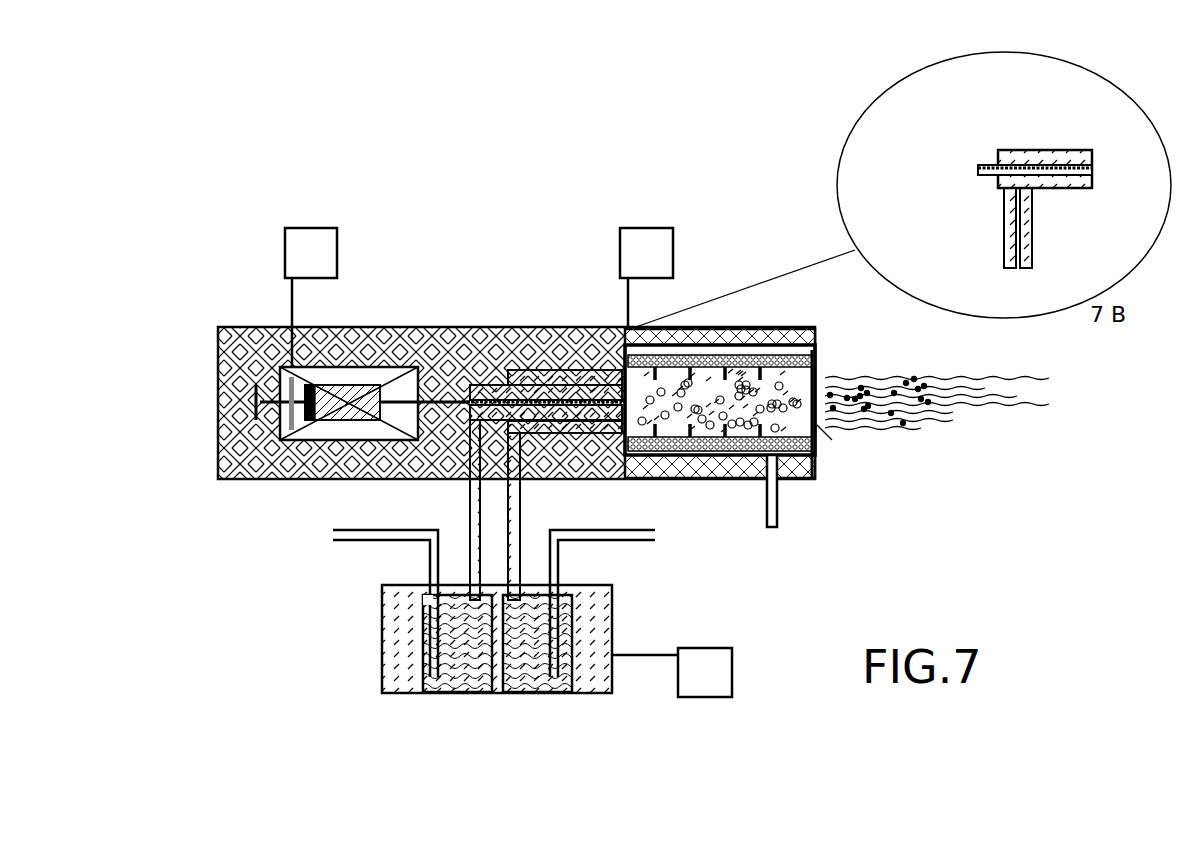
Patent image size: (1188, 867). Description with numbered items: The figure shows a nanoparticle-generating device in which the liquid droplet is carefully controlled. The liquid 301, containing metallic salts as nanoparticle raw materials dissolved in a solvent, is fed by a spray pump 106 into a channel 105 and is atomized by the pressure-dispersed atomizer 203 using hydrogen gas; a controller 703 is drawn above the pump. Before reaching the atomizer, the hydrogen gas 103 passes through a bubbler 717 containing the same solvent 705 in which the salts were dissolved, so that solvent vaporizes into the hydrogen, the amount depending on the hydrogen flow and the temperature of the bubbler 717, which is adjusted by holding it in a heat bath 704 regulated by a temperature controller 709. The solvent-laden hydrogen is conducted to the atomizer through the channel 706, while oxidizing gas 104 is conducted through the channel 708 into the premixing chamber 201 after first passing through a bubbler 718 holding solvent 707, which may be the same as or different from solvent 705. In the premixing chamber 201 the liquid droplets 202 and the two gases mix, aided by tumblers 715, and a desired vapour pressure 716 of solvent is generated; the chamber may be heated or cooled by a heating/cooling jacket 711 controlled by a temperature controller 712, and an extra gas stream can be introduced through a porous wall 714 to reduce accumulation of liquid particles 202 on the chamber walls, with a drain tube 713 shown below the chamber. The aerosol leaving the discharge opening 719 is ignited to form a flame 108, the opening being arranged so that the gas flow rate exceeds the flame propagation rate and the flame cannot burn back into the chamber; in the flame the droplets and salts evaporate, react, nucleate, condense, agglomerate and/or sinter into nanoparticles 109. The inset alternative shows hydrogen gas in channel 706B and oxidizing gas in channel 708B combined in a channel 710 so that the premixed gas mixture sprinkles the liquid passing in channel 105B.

In FIG. 7, the pump controller 703 is at (307, 228).
In FIG. 7, the temperature controller 712 is at (640, 228).
In FIG. 7, the spray pump 106 is at (363, 402).
In FIG. 7, the liquid 301 is at (330, 440).
In FIG. 7, the channel 105 is at (450, 388).
In FIG. 7, the pressure-dispersed atomizer 203 is at (617, 365).
In FIG. 7, the premixing chamber 201 is at (747, 390).
In FIG. 7, the tumblers 715 is at (690, 372).
In FIG. 7, the vapour pressure 716 is at (820, 358).
In FIG. 7, the heating/cooling jacket 711 is at (726, 481).
In FIG. 7, the liquid droplets 202 is at (803, 477).
In FIG. 7, the porous wall 714 is at (815, 455).
In FIG. 7, the flame 108 is at (937, 427).
In FIG. 7, the nanoparticles 109 is at (940, 412).
In FIG. 7, the discharge opening 719 is at (820, 412).
In FIG. 7, the drain tube 713 is at (772, 535).
In FIG. 7, the channel 706 is at (468, 488).
In FIG. 7, the channel 708 is at (524, 511).
In FIG. 7, the hydrogen gas 103 is at (333, 540).
In FIG. 7, the oxidizing gas 104 is at (655, 541).
In FIG. 7, the heat bath 704 is at (462, 667).
In FIG. 7, the solvent 705 is at (465, 690).
In FIG. 7, the solvent 707 is at (538, 690).
In FIG. 7, the bubbler 717 is at (428, 597).
In FIG. 7, the bubbler 718 is at (598, 693).
In FIG. 7, the temperature controller 709 is at (737, 700).
In FIG. 7B, the channel 710 is at (1060, 143).
In FIG. 7B, the channel 105B is at (978, 165).
In FIG. 7B, the channel 706B is at (996, 202).
In FIG. 7B, the channel 708B is at (1042, 222).